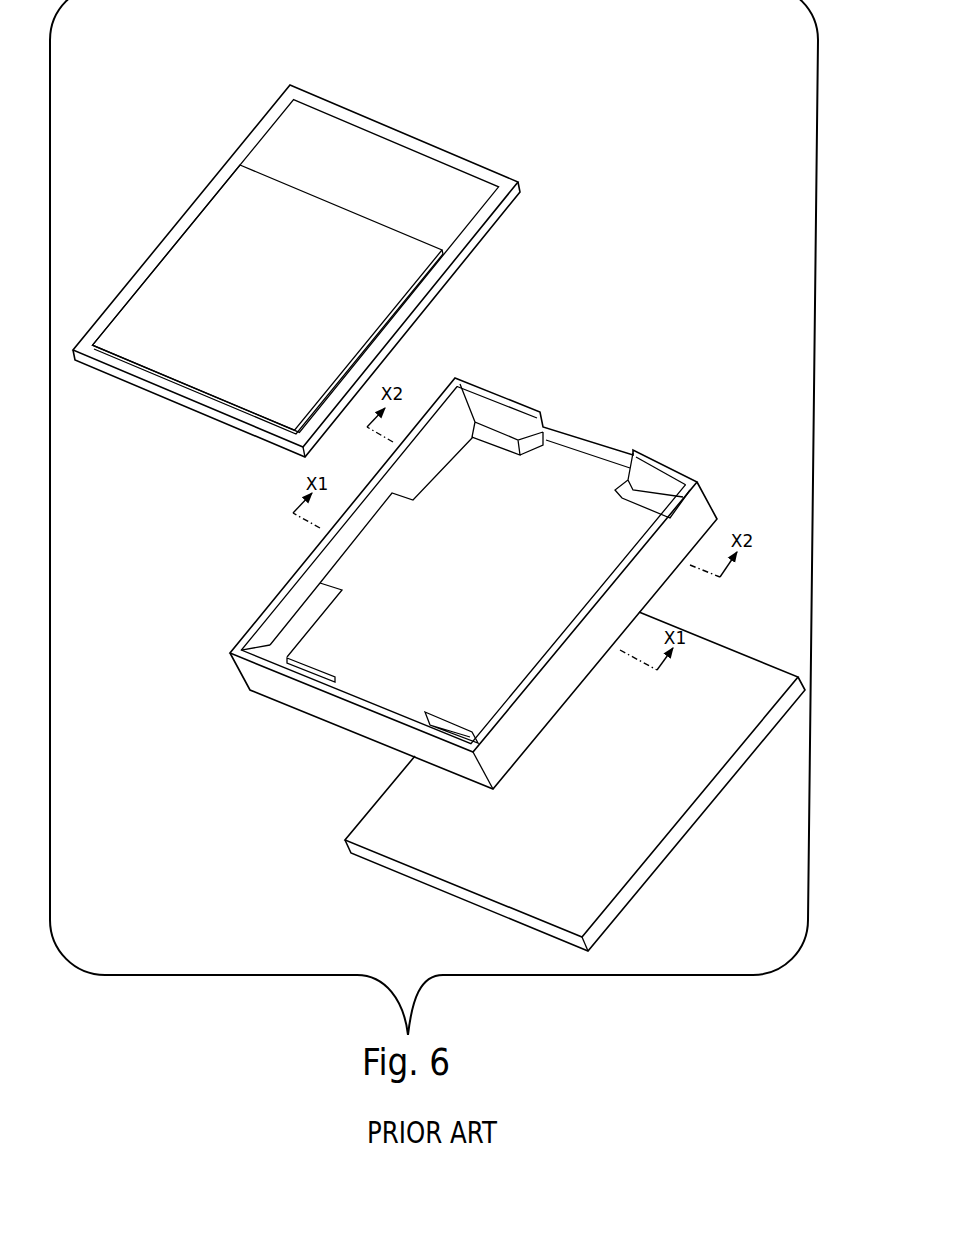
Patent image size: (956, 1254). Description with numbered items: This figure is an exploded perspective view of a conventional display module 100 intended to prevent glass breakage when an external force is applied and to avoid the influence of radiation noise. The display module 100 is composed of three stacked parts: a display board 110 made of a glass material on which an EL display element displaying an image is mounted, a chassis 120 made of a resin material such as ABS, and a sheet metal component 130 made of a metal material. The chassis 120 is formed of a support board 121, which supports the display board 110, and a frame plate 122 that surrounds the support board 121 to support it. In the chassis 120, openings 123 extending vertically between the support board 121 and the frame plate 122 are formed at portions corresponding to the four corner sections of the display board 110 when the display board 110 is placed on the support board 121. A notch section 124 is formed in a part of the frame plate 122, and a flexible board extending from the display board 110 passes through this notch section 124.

The display module 100 is at (702, 64).
The display board 110 is at (434, 99).
The chassis 120 is at (679, 416).
The support board 121 is at (508, 438).
The frame plate 122 is at (466, 395).
The openings 123 is at (503, 477).
The notch section 124 is at (593, 438).
The sheet metal component 130 is at (771, 647).